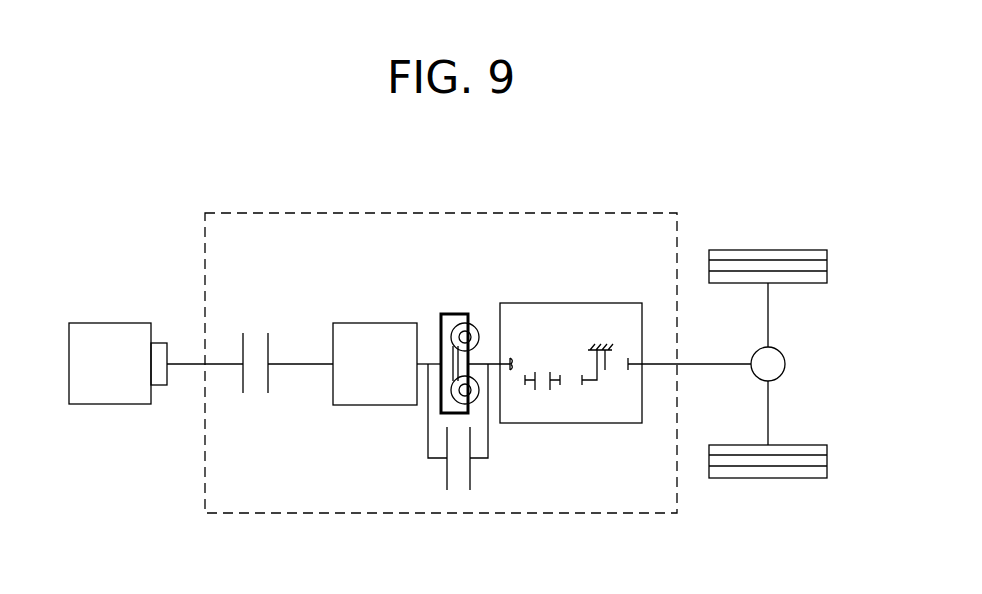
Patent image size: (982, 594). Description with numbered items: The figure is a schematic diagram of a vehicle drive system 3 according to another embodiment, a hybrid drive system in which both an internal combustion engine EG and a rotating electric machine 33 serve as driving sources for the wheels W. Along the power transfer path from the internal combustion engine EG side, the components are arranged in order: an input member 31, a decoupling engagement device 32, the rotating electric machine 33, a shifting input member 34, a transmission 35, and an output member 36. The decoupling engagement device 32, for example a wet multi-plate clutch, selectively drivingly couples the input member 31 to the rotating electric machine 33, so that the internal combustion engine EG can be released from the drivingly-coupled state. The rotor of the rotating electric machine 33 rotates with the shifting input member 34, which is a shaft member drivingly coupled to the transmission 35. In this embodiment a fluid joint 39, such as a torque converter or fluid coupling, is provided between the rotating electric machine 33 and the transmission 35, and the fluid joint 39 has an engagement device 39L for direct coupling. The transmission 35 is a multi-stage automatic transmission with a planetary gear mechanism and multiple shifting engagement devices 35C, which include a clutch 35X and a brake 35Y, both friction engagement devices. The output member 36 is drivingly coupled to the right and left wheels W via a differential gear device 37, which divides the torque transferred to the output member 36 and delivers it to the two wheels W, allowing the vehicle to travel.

The vehicle drive system 3 is at (210, 515).
The internal combustion engine EG is at (82, 323).
The input member 31 is at (214, 366).
The decoupling engagement device 32 is at (253, 318).
The rotating electric machine 33 is at (358, 323).
The shifting input member 34 is at (493, 364).
The transmission 35 is at (567, 382).
The shifting engagement devices 35C is at (567, 426).
The clutch 35X is at (543, 397).
The brake 35Y is at (597, 392).
The output member 36 is at (658, 364).
The differential gear device 37 is at (785, 350).
The fluid joint 39 is at (455, 300).
The engagement device for direct coupling 39L is at (460, 490).
The wheels W is at (735, 250).